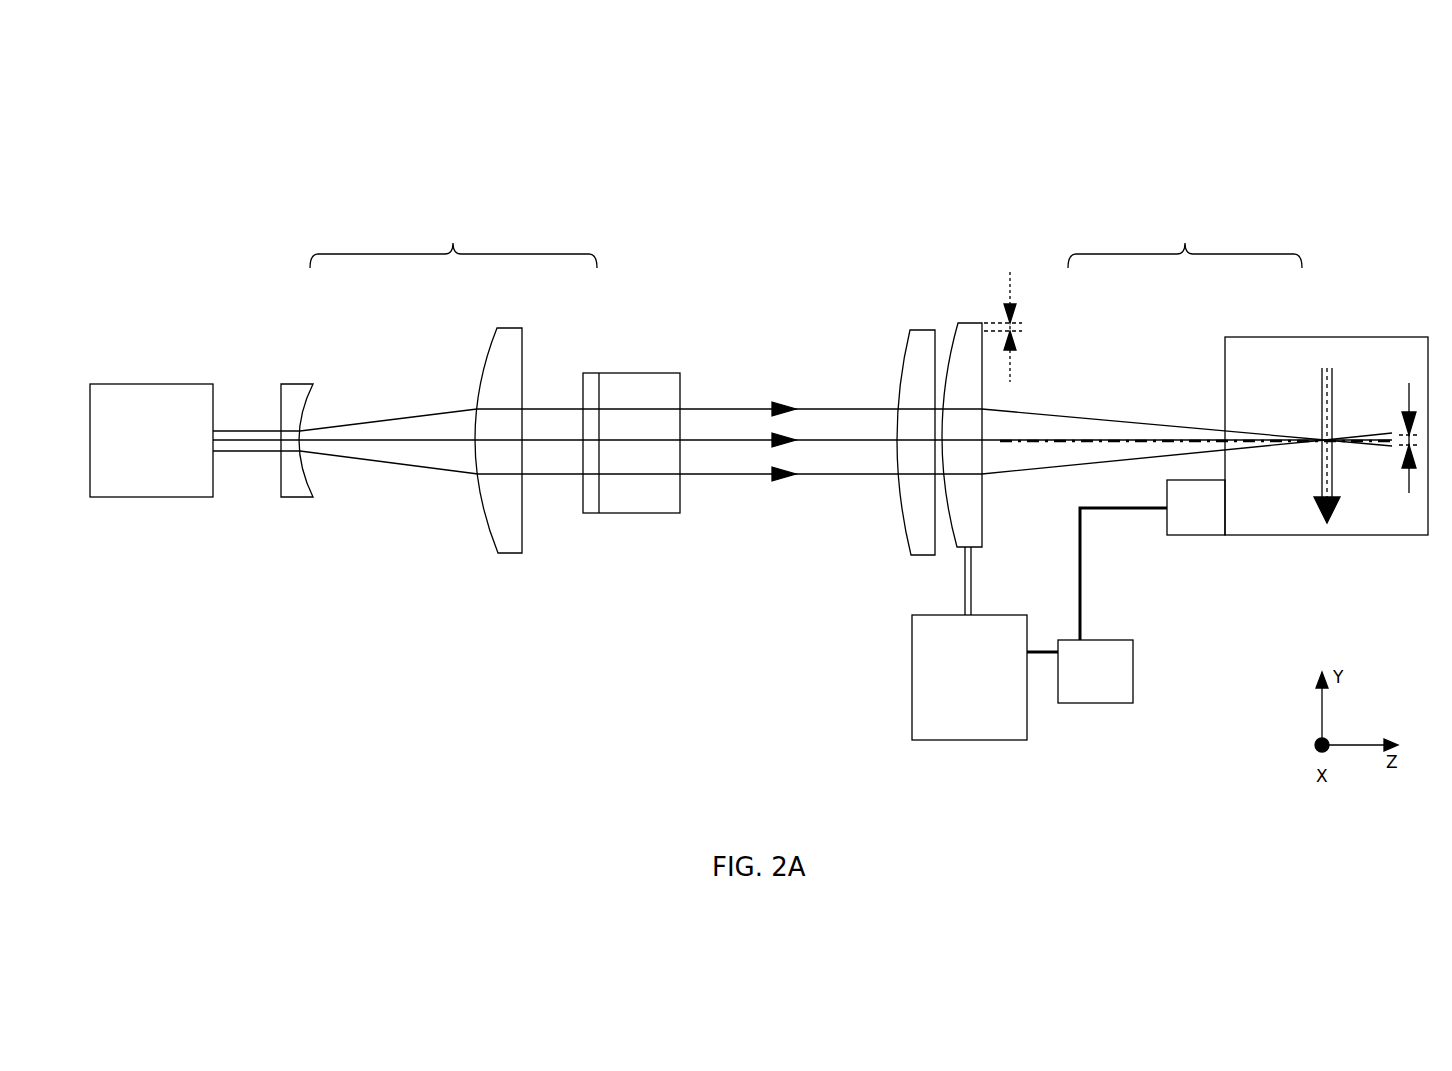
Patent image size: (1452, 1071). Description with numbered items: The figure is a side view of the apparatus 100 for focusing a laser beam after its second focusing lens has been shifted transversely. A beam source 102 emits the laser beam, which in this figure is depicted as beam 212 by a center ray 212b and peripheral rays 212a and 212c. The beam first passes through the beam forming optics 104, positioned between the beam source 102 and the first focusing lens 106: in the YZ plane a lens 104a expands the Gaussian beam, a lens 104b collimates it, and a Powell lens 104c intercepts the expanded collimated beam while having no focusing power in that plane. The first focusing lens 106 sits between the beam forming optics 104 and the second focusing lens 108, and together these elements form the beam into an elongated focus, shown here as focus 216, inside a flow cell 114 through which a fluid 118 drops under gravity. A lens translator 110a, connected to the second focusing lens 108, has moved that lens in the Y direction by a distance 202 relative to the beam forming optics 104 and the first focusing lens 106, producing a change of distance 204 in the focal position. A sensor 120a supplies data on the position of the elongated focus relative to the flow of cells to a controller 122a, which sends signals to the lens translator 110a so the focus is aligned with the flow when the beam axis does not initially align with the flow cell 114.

The apparatus 100 is at (220, 135).
The beam source 102 is at (135, 384).
The beam forming optics 104 is at (453, 236).
The lens 104a is at (296, 385).
The lens 104b is at (508, 328).
The Powell lens 104c is at (637, 372).
The first focusing lens 106 is at (923, 327).
The second focusing lens 108 is at (960, 323).
The lens translator 110a is at (1027, 683).
The flow cell 114 is at (1387, 337).
The fluid 118 is at (1332, 503).
The sensor 120a is at (1195, 535).
The controller 122a is at (1133, 677).
The distance 202 is at (1017, 324).
The distance 204 is at (1400, 447).
The beam rays 212 is at (1185, 236).
The upper ray 212a is at (999, 412).
The central ray 212b is at (1042, 440).
The lower ray 212c is at (1096, 460).
The scan line 216 is at (1317, 438).